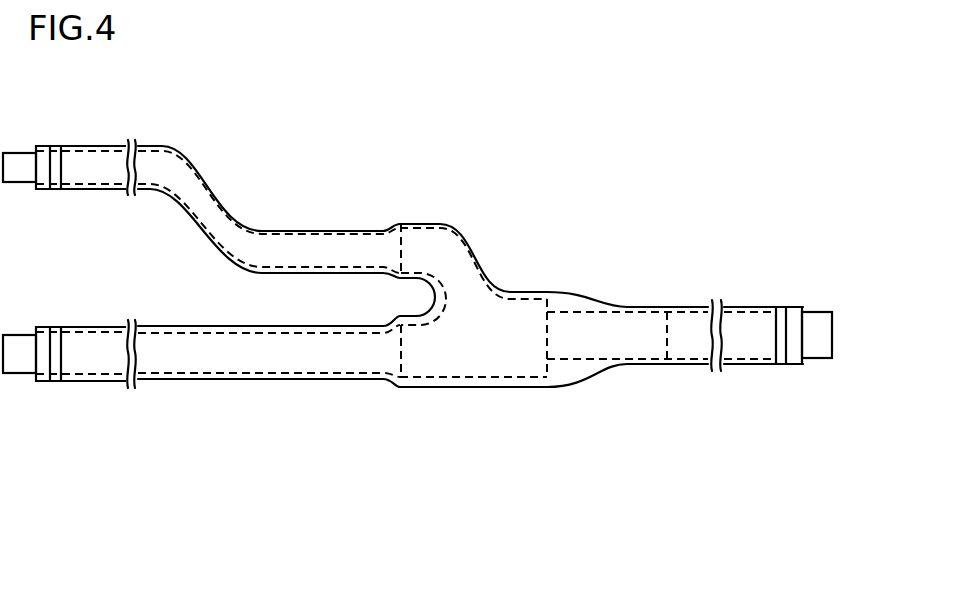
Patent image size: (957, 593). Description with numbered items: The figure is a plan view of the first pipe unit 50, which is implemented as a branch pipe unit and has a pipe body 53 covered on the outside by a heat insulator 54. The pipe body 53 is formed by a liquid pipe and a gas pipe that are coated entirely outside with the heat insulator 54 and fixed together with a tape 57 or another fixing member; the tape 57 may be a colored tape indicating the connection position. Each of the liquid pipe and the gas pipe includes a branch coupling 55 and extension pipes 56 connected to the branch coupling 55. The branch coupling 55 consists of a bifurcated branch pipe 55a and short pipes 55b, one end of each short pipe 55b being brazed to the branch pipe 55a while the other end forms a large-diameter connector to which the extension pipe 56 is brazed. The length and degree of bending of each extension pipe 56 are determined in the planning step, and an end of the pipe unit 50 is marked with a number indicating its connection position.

The first pipe unit 50 is at (473, 216).
The pipe body 53 is at (559, 284).
The heat insulator 54 is at (76, 143).
The branch coupling 55 is at (490, 379).
The bifurcated branch pipe 55a is at (440, 370).
The short pipe 55b is at (311, 243).
The extension pipe 56 is at (105, 163).
The tape 57 is at (60, 166).